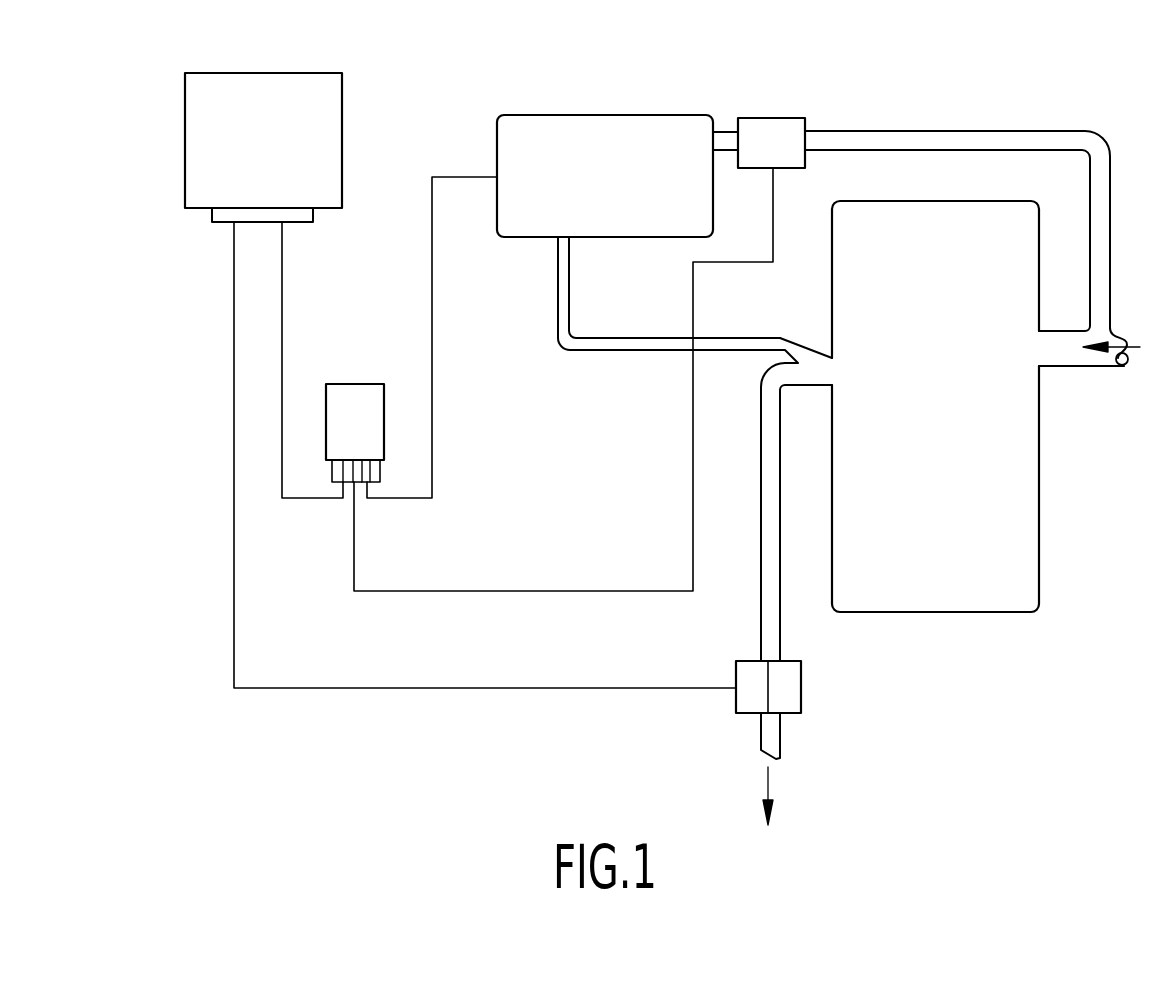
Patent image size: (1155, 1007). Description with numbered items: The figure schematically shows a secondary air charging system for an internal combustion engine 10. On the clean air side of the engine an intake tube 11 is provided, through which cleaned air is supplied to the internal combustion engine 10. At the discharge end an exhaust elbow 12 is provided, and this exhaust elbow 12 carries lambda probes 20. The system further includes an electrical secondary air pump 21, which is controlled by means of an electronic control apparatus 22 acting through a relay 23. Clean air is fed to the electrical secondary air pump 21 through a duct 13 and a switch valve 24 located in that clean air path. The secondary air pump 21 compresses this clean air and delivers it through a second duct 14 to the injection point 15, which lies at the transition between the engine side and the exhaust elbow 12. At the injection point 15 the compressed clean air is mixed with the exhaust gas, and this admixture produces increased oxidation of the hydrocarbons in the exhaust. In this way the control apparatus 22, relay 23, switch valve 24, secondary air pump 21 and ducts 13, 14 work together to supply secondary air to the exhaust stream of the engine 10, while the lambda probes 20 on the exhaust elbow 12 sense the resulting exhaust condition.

The internal combustion engine 10 is at (931, 216).
The intake tube 11 is at (1058, 338).
The exhaust elbow 12 is at (768, 421).
The duct 13 is at (952, 140).
The duct 14 is at (652, 343).
The injection point 15 is at (805, 356).
The lambda probes 20 is at (795, 687).
The electrical secondary air pump 21 is at (609, 128).
The electronic control apparatus 22 is at (333, 108).
The relay 23 is at (352, 402).
The switch valve 24 is at (778, 124).